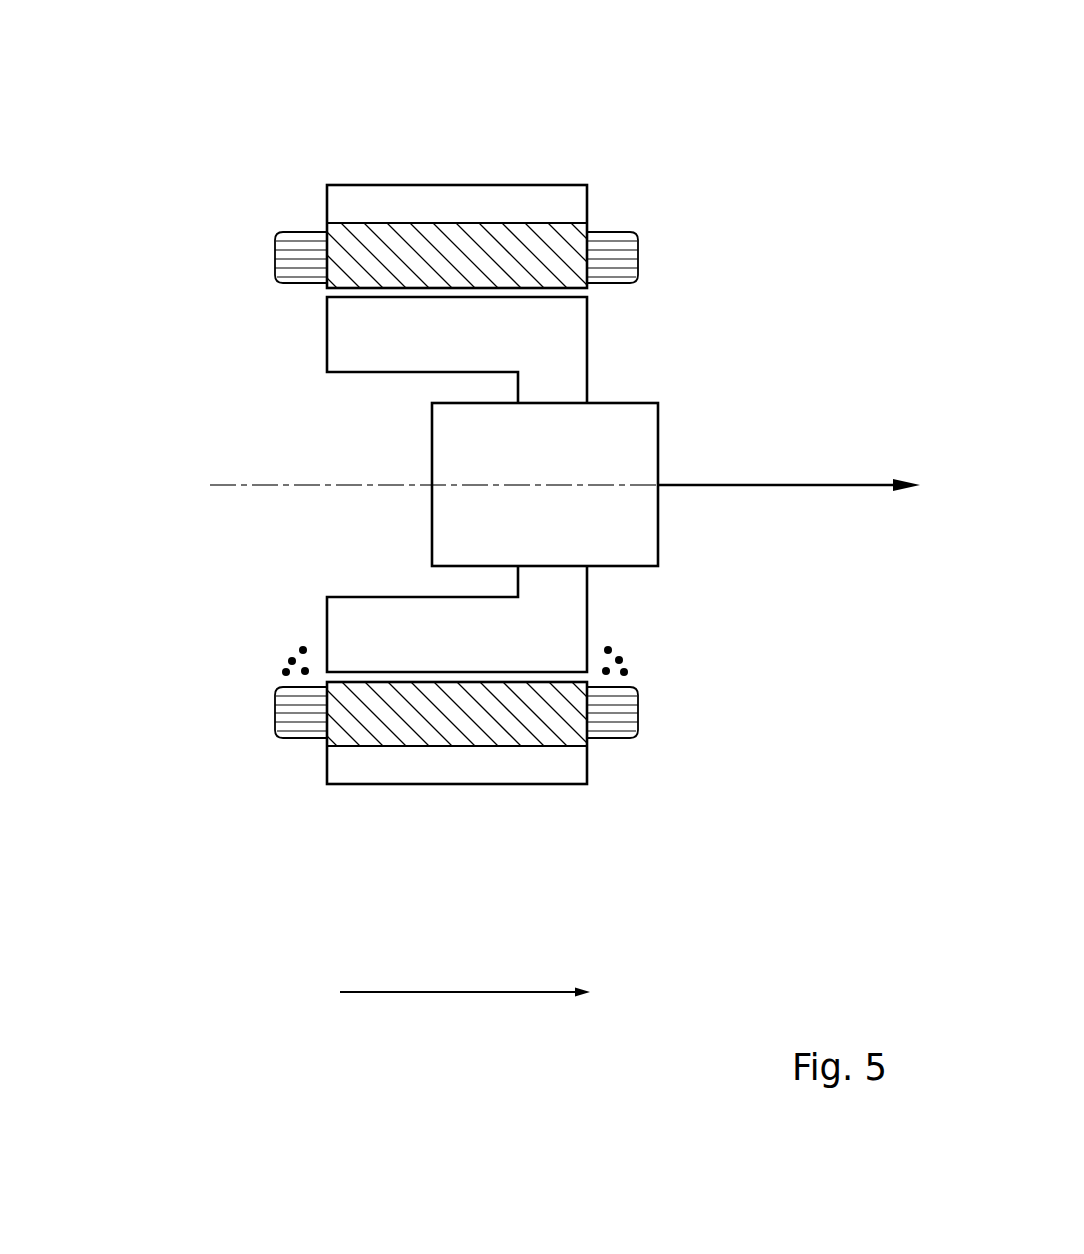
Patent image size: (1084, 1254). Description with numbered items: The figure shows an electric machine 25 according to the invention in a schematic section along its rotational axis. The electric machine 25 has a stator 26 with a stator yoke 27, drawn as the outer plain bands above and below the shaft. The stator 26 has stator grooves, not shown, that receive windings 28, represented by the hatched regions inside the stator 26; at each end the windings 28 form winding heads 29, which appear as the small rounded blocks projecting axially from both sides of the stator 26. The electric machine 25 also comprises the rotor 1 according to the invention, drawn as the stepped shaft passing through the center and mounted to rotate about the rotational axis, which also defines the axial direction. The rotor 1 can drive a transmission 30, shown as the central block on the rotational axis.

The rotor 1 is at (325, 322).
The electric machine 25 is at (250, 145).
The stator 26 is at (362, 183).
The stator yoke 27 is at (423, 205).
The windings 28 is at (549, 252).
The winding heads 29 is at (273, 258).
The transmission 30 is at (640, 541).